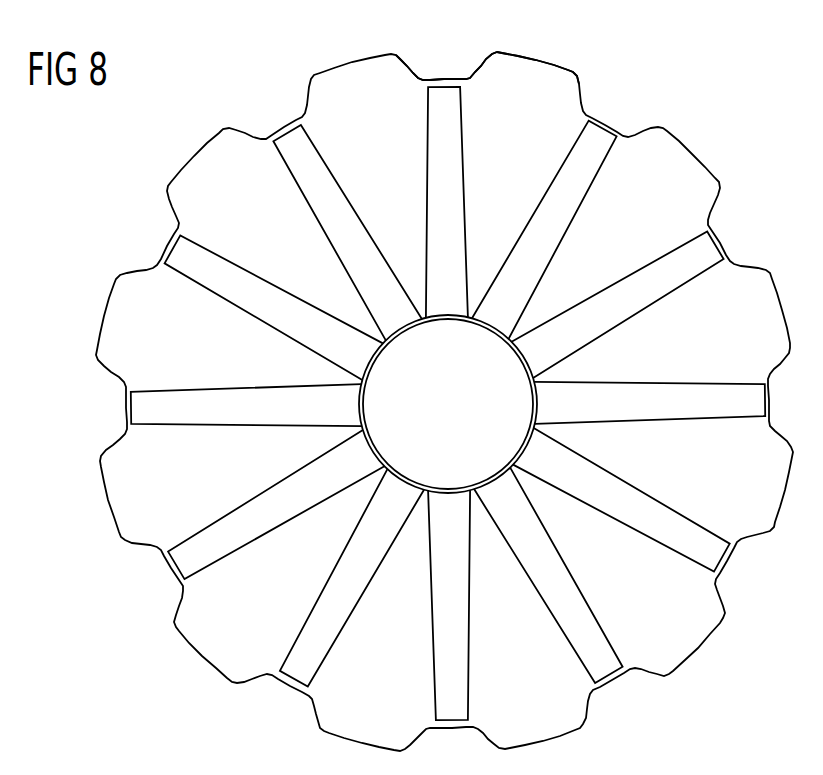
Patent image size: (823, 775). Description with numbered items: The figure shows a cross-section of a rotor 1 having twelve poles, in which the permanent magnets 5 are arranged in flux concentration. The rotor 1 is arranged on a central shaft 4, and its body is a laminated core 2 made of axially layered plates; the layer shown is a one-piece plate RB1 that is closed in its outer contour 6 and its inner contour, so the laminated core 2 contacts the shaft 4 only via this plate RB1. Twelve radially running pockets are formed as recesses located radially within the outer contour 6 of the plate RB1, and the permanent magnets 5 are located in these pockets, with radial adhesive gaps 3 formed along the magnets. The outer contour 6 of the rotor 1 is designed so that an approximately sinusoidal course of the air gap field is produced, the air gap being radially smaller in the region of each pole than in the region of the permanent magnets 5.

The rotor 1 is at (703, 151).
The laminated core 2 is at (670, 142).
The radial adhesive gap 3 is at (638, 263).
The shaft 4 is at (517, 402).
The permanent magnet 5 is at (448, 403).
The outer contour 6 is at (482, 67).
The plate RB1 is at (532, 80).